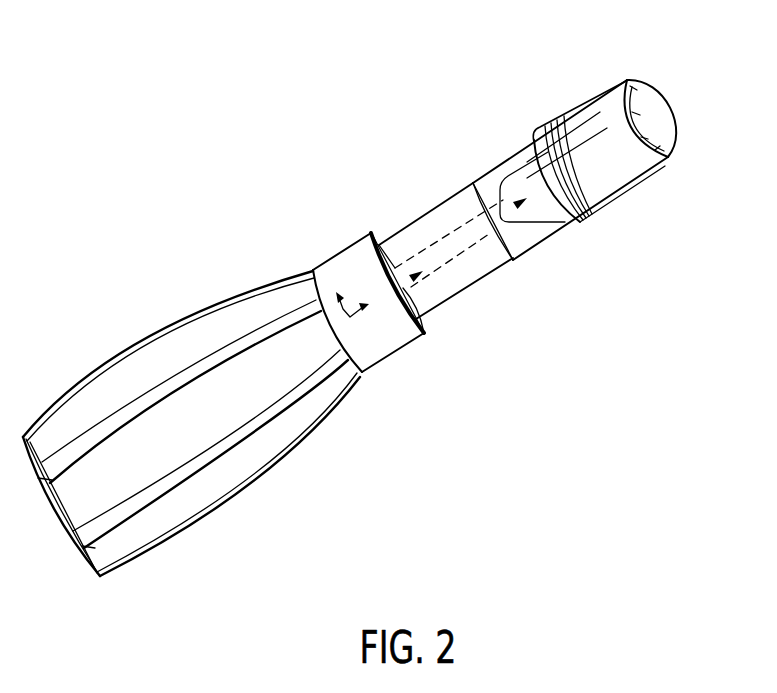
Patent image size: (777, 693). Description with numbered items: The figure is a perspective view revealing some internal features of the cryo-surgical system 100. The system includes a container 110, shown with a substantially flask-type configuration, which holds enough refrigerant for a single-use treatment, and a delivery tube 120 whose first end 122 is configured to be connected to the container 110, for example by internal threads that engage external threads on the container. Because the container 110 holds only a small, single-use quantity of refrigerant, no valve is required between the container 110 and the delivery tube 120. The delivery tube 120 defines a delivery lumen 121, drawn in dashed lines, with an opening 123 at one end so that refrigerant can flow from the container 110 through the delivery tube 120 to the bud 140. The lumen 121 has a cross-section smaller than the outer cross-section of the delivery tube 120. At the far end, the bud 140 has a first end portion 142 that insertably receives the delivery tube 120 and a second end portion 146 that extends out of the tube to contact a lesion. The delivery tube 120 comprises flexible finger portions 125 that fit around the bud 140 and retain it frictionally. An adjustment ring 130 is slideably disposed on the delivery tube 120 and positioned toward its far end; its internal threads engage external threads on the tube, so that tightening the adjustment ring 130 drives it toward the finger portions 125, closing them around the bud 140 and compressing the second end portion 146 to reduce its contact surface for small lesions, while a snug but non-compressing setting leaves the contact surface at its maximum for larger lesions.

The cryo-surgical system 100 is at (330, 123).
The container 110 is at (166, 332).
The delivery tube 120 is at (410, 223).
The delivery lumen 121 is at (461, 255).
The first end 122 is at (346, 248).
The opening 123 is at (418, 291).
The finger portions 125 is at (533, 128).
The adjustment ring 130 is at (495, 170).
The bud 140 is at (607, 97).
The first end portion 142 is at (542, 224).
The second end portion 146 is at (676, 128).